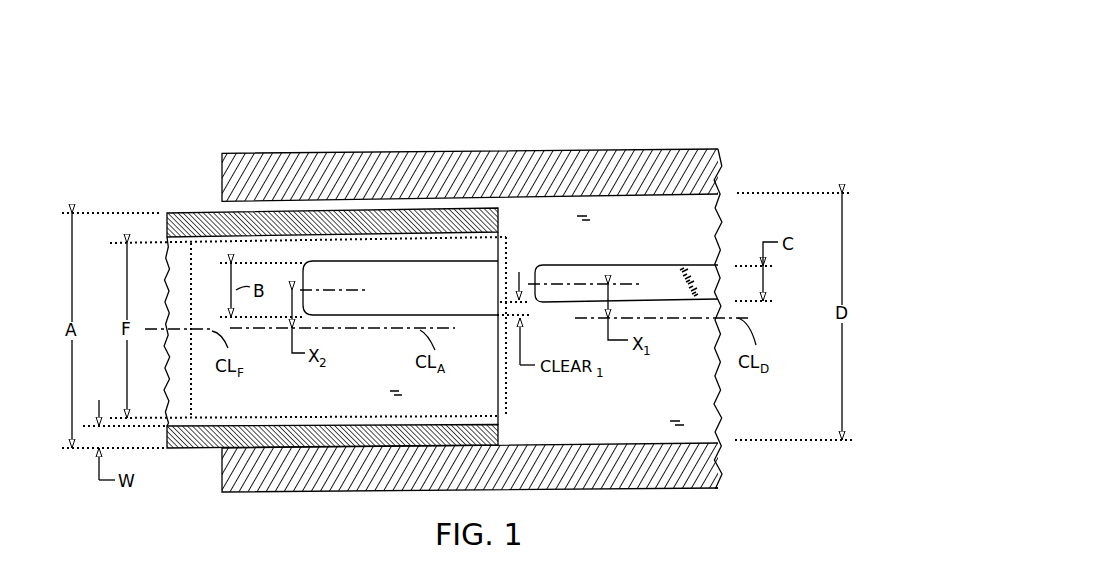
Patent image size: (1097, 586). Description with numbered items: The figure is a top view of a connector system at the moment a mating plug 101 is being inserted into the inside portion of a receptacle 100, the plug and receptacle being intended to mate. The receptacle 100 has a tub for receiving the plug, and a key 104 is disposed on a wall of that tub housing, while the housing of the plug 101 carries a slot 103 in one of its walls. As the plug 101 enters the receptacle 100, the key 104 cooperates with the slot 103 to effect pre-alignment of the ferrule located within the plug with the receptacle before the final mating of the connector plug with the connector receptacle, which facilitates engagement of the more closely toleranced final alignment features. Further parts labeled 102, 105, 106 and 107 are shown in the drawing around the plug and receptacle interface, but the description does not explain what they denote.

The receptacle 100 is at (752, 107).
The mating plug 101 is at (184, 200).
The receptacle connector housing 102 is at (612, 150).
The slot 103 is at (417, 300).
The key 104 is at (659, 266).
The socket contact entry 105 is at (532, 283).
The pin contact tip 106 is at (498, 313).
The plug connector mating face 107 is at (498, 378).